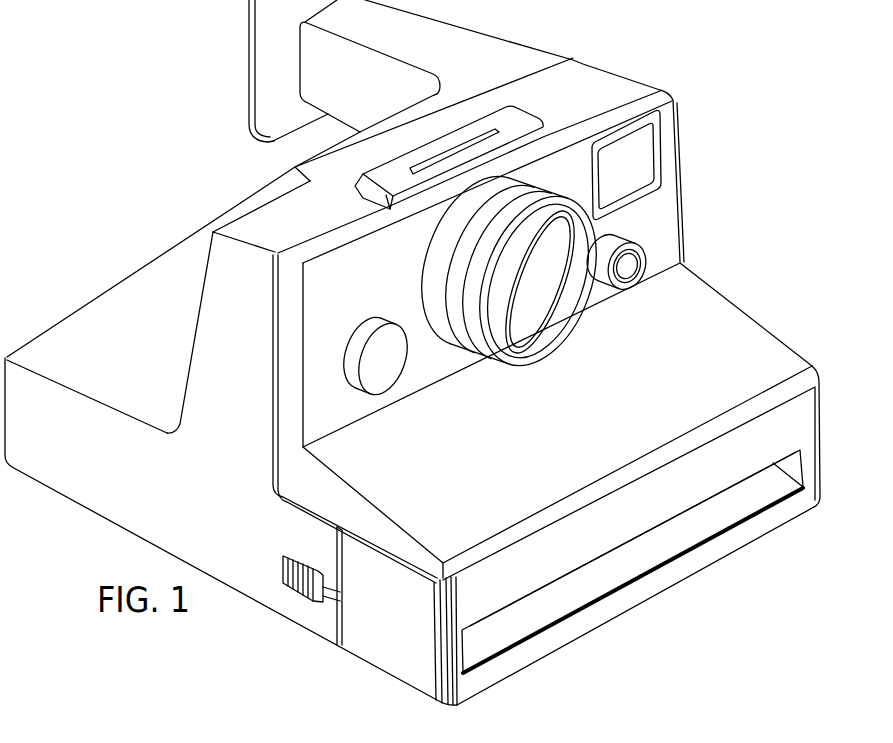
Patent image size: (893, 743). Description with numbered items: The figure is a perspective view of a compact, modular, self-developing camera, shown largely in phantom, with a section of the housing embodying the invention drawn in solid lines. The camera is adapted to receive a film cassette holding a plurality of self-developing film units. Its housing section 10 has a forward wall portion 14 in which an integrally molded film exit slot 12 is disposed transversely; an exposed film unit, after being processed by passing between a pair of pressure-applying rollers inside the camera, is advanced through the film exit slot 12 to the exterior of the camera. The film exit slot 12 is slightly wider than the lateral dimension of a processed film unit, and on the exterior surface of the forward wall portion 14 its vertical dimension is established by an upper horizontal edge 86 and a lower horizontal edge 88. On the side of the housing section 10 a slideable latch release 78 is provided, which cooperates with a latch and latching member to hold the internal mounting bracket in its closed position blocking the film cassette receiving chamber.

The housing section 10 is at (399, 660).
The film exit slot 12 is at (675, 532).
The forward wall portion 14 is at (483, 680).
The slideable latch release 78 is at (300, 556).
The upper horizontal edge 86 is at (558, 584).
The lower horizontal edge 88 is at (596, 600).